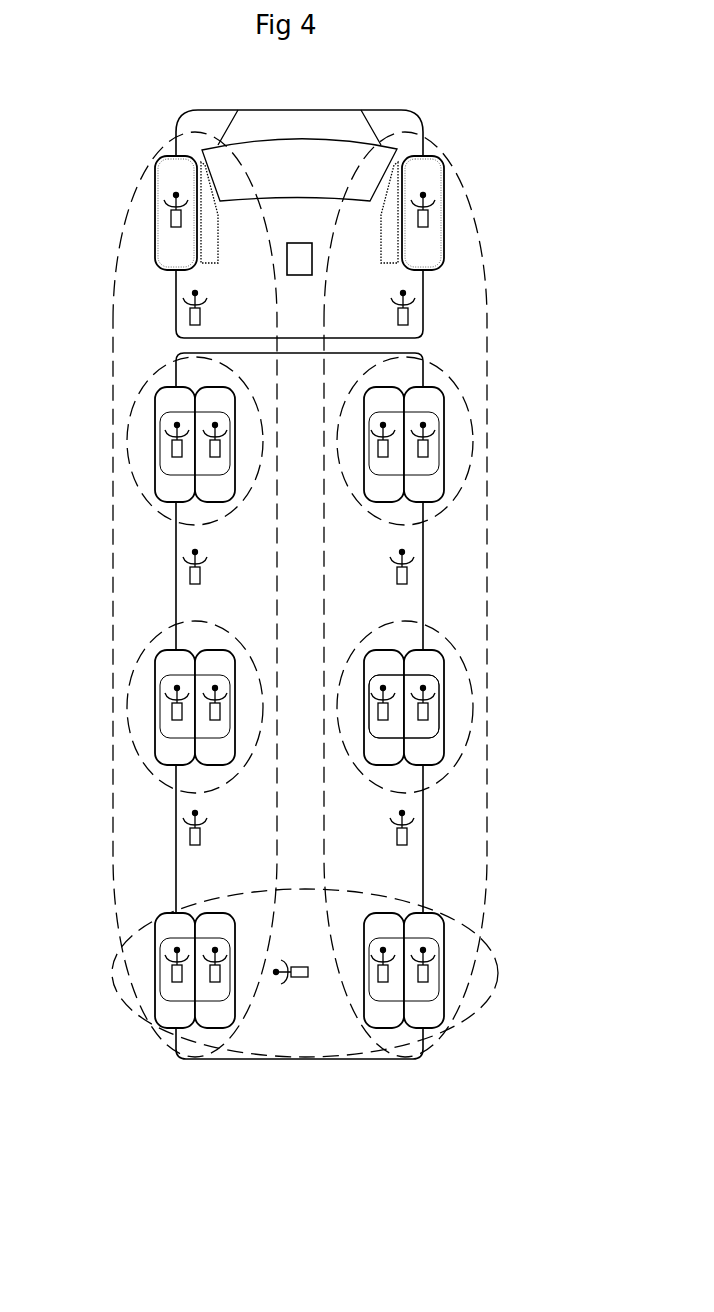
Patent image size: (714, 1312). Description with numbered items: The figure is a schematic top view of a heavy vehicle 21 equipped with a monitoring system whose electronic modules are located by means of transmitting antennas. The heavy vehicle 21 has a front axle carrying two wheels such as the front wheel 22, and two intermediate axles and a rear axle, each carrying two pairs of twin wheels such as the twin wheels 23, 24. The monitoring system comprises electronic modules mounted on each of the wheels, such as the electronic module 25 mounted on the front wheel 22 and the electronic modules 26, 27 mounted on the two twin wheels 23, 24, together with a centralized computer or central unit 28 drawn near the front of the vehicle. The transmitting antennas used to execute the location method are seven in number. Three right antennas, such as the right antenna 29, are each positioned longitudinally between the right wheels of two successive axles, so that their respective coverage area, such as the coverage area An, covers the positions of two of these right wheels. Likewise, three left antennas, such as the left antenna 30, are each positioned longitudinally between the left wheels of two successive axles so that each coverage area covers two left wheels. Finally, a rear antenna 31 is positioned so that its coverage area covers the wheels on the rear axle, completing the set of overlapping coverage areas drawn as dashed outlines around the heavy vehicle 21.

The heavy vehicle 21 is at (453, 568).
The front wheel 22 is at (428, 245).
The twin wheel 23 is at (437, 662).
The twin wheel 24 is at (393, 745).
The electronic module 25 is at (428, 217).
The electronic module 26 is at (425, 707).
The electronic module 27 is at (382, 717).
The central unit 28 is at (287, 262).
The right antenna 29 is at (405, 318).
The left antenna 30 is at (188, 576).
The rear antenna 31 is at (298, 978).
The coverage area An is at (453, 173).